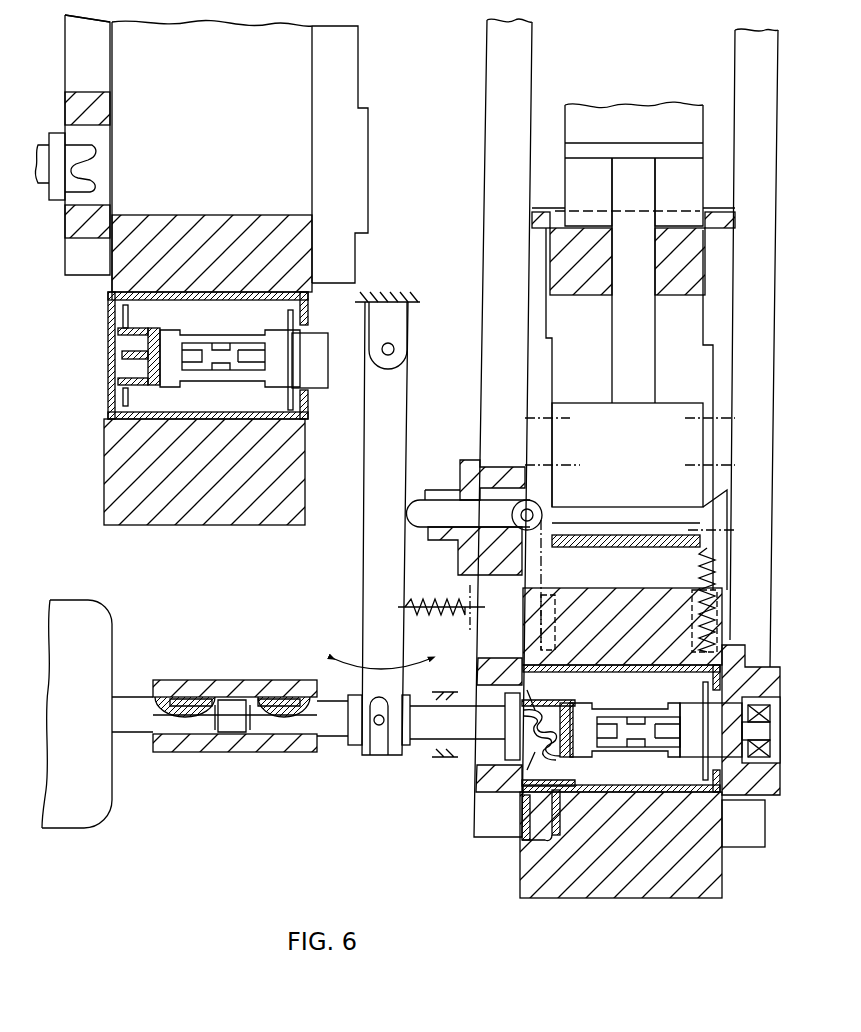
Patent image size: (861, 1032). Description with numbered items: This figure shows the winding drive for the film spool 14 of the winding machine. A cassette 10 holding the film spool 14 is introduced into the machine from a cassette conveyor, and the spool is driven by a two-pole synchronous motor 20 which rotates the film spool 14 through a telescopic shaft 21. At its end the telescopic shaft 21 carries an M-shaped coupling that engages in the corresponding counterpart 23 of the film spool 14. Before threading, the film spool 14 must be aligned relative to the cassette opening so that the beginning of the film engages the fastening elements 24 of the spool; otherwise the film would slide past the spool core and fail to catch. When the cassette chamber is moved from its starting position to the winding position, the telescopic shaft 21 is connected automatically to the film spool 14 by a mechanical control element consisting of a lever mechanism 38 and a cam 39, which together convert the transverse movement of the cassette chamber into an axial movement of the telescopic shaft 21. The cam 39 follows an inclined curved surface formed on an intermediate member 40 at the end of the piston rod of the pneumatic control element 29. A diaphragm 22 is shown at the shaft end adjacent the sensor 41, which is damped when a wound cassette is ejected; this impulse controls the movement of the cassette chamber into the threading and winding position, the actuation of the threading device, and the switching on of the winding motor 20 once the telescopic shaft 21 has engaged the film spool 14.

The cassette 10 is at (625, 790).
The film spool 14 is at (275, 378).
The two-pole synchronous motor 20 is at (100, 772).
The telescopic shaft 21 is at (288, 727).
The diaphragm 22 is at (530, 740).
The counterpart 23 is at (556, 735).
The fastening elements 24 is at (241, 355).
The pneumatic control element 29 is at (617, 120).
The lever mechanism 38 is at (438, 510).
The cam 39 is at (535, 462).
The intermediate member 40 is at (555, 433).
The sensor 41 is at (532, 842).